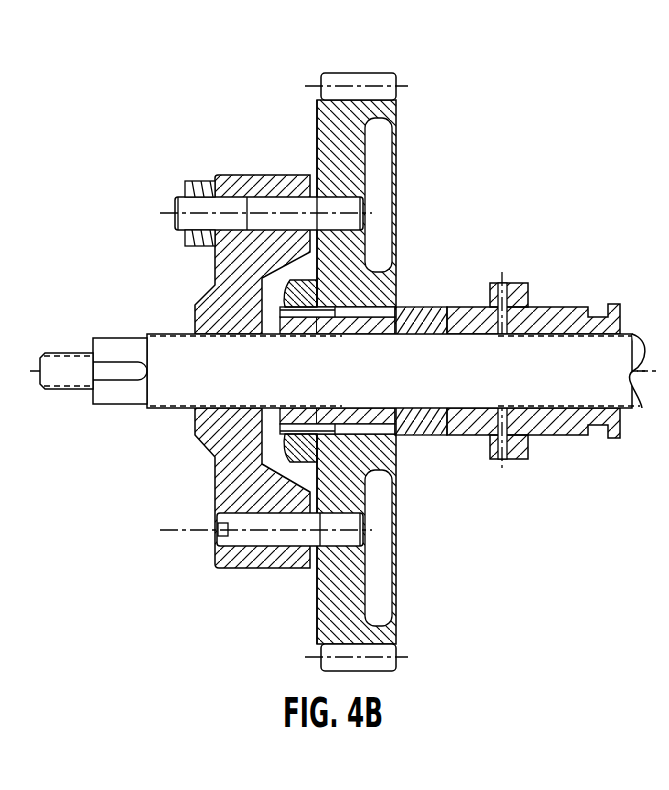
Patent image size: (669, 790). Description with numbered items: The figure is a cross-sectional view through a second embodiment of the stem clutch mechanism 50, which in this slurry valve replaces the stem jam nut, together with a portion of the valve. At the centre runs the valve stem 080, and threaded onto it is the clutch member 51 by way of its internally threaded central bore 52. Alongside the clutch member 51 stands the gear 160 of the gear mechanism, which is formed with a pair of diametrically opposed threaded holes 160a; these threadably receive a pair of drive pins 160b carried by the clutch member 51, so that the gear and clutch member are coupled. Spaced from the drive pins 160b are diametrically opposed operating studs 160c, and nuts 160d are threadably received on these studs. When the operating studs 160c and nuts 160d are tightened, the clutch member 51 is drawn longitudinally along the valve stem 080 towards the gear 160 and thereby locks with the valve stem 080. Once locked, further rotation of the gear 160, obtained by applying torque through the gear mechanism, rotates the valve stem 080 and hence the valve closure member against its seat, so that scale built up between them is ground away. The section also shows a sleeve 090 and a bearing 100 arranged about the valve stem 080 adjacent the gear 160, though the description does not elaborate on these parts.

The stem clutch mechanism 50 is at (225, 313).
The clutch member 51 is at (218, 458).
The internally threaded central bore 52 is at (228, 335).
The valve stem 080 is at (160, 398).
The sleeve 090 is at (428, 305).
The bearing 100 is at (293, 456).
The gear 160 is at (390, 104).
The threaded holes 160a is at (362, 537).
The drive pins 160b is at (218, 530).
The operating studs 160c is at (176, 204).
The nuts 160d is at (187, 232).